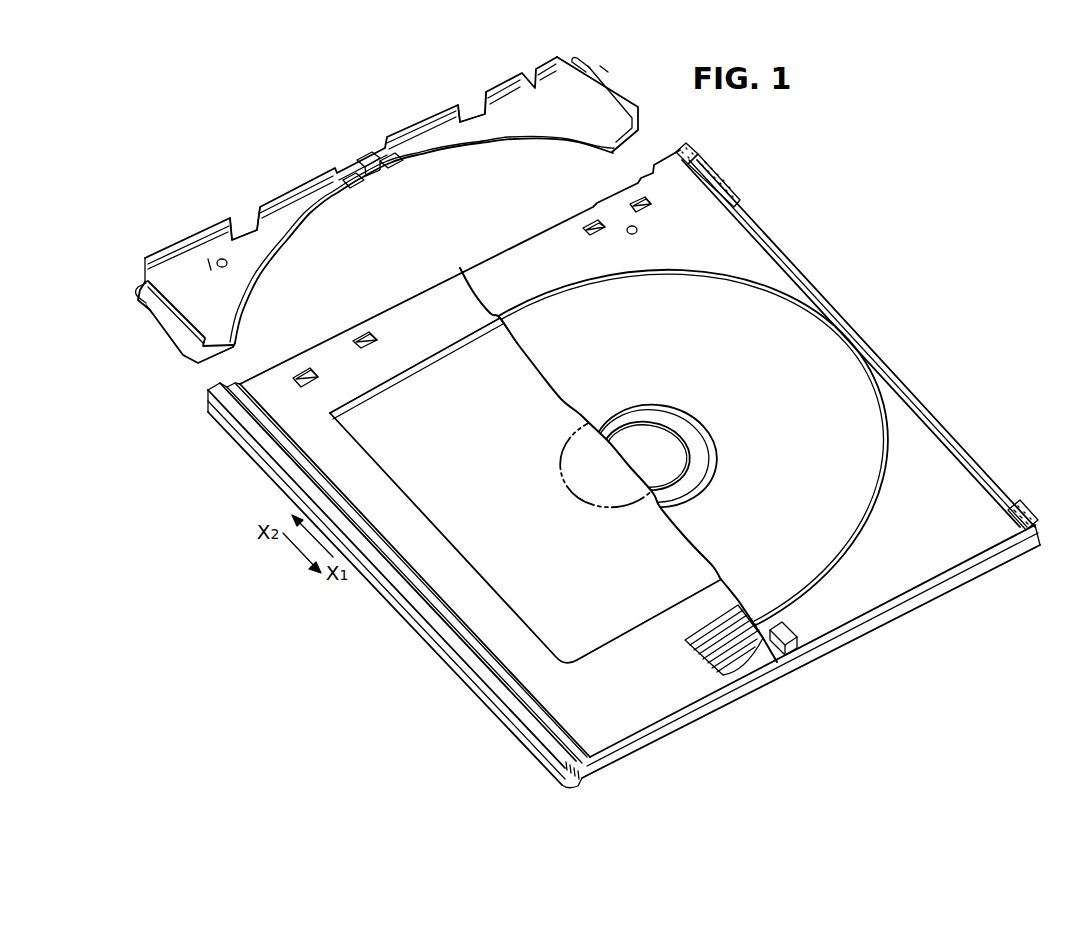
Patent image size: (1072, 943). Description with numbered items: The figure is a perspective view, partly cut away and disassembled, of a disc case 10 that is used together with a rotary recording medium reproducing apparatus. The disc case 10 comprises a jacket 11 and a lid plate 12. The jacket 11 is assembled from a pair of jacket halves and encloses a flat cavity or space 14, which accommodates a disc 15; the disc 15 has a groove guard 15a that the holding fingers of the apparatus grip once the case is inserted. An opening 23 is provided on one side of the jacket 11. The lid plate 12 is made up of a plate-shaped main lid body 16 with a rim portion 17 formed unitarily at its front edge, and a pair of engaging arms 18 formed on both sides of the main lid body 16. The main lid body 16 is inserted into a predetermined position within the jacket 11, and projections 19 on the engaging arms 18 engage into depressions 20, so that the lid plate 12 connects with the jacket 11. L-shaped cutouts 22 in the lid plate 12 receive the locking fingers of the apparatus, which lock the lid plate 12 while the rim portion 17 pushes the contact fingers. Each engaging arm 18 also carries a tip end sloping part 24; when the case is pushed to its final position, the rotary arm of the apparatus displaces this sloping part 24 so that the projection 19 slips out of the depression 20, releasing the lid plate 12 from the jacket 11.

The disc case 10 is at (708, 153).
The jacket 11 is at (400, 612).
The lid plate 12 is at (279, 184).
The flat cavity or space 14 is at (940, 451).
The disc 15 is at (879, 474).
The groove guard 15a is at (855, 539).
The main lid body 16 is at (470, 143).
The rim portion 17 is at (402, 133).
The engaging arm 18 is at (167, 334).
The projection 19 is at (143, 311).
The depression 20 is at (698, 168).
The L-shaped cutout 22 is at (240, 232).
The opening 23 is at (462, 266).
The tip end sloping part 24 is at (140, 291).